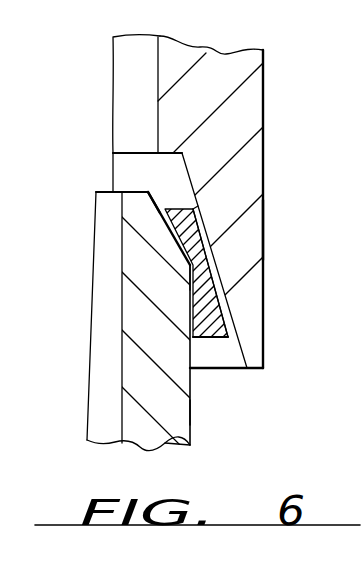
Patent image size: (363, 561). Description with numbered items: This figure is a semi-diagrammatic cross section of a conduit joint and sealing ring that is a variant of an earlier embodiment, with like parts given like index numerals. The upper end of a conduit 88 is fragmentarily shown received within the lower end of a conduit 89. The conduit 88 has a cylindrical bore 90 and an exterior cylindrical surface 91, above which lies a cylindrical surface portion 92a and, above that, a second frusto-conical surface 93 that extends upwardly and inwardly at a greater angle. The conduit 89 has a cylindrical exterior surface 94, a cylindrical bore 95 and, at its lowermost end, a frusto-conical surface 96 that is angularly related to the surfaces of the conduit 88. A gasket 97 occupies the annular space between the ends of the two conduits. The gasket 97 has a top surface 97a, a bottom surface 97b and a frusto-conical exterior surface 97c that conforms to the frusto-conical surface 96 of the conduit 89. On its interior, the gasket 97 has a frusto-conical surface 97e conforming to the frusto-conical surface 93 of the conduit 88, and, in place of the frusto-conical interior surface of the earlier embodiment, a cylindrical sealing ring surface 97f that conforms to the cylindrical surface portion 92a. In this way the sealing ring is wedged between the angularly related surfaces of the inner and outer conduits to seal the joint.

The conduit 88 is at (180, 432).
The conduit 89 is at (257, 233).
The cylindrical bore 90 is at (122, 352).
The exterior cylindrical surface 91 is at (193, 412).
The cylindrical surface portion 92a is at (190, 317).
The second frusto-conical surface 93 is at (158, 212).
The cylindrical exterior surface 94 is at (263, 85).
The cylindrical bore 95 is at (158, 104).
The frusto-conical surface 96 is at (197, 207).
The gasket 97 is at (222, 312).
The top surface 97a is at (181, 203).
The bottom surface 97b is at (217, 338).
The frusto-conical exterior surface 97c is at (218, 283).
The frusto-conical interior surface 97e is at (165, 235).
The cylindrical sealing ring surface 97f is at (190, 287).